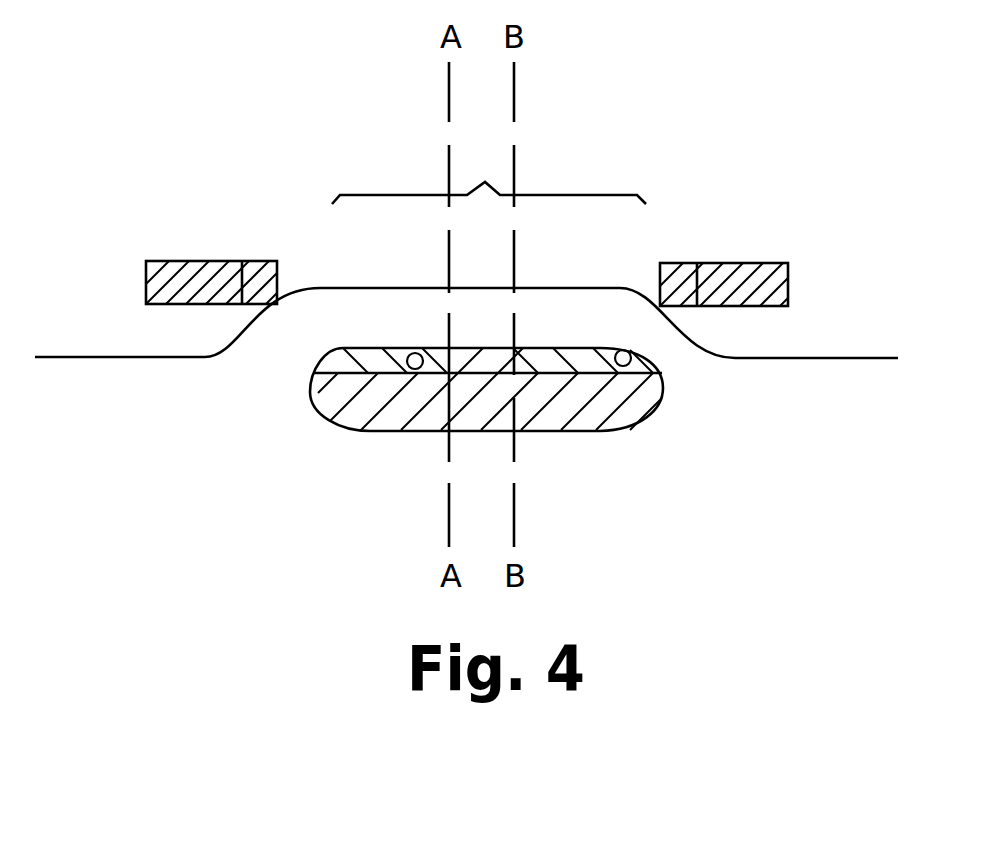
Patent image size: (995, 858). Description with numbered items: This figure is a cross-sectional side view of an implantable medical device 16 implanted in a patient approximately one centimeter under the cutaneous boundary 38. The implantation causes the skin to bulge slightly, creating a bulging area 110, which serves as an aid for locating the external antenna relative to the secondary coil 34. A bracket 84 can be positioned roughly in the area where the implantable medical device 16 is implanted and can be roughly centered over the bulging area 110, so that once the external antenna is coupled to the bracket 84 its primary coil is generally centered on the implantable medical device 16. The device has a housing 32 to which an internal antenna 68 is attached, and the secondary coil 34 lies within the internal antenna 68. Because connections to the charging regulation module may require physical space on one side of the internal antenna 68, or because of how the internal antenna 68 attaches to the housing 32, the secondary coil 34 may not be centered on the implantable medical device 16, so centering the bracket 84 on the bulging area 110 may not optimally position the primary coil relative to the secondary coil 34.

The implantable medical device 16 is at (465, 396).
The housing 32 is at (357, 432).
The secondary coil 34 is at (413, 356).
The cutaneous boundary 38 is at (858, 358).
The internal antenna 68 is at (323, 360).
The bracket 84 is at (255, 261).
The bulging area 110 is at (489, 177).